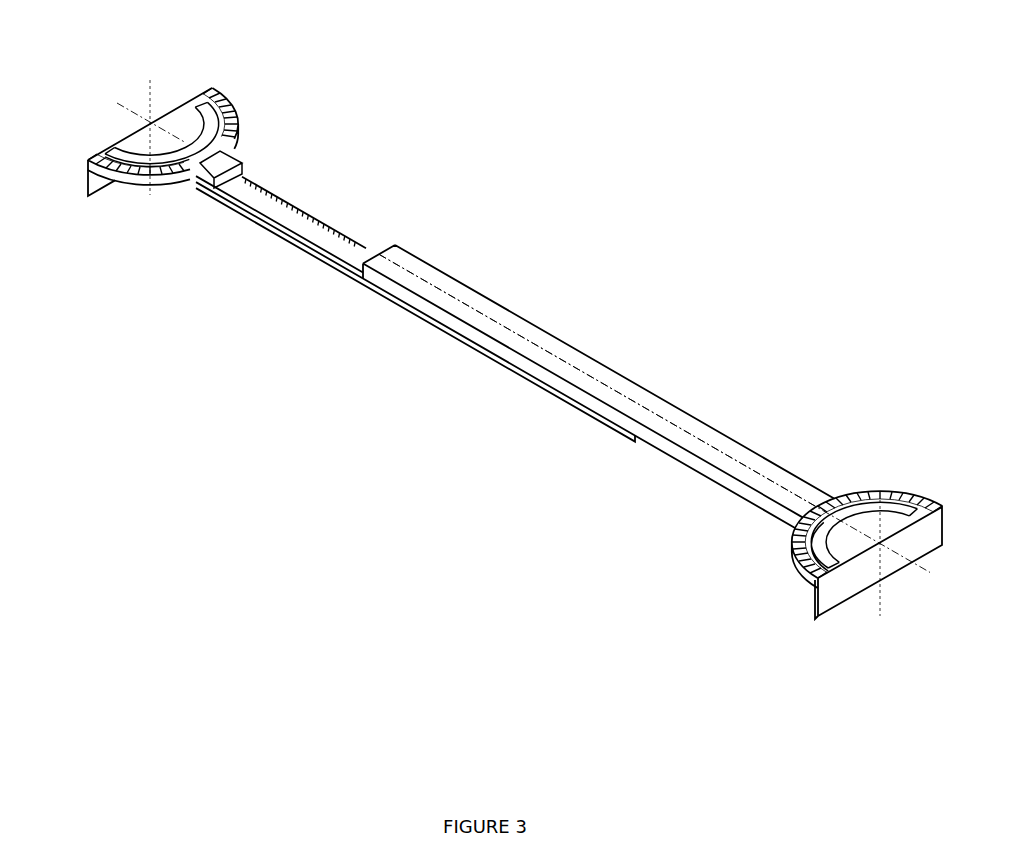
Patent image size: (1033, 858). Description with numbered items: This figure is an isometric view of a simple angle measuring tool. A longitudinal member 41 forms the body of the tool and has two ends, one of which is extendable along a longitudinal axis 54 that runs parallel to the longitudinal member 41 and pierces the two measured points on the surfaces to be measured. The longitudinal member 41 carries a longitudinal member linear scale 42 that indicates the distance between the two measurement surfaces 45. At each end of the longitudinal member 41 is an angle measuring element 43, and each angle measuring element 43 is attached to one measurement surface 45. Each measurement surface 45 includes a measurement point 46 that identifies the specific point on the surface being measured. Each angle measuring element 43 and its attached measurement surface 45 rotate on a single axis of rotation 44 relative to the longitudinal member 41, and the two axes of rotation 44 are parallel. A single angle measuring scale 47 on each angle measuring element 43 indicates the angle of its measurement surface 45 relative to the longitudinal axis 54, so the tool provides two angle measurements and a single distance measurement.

The longitudinal member 41 is at (417, 252).
The longitudinal member linear scale 42 is at (288, 186).
The angle measuring element 43 is at (143, 187).
The axis of rotation 44 is at (153, 82).
The measurement surface 45 is at (86, 173).
The measurement point 46 is at (140, 117).
The angle measuring scale 47 is at (245, 102).
The longitudinal axis 54 is at (558, 352).